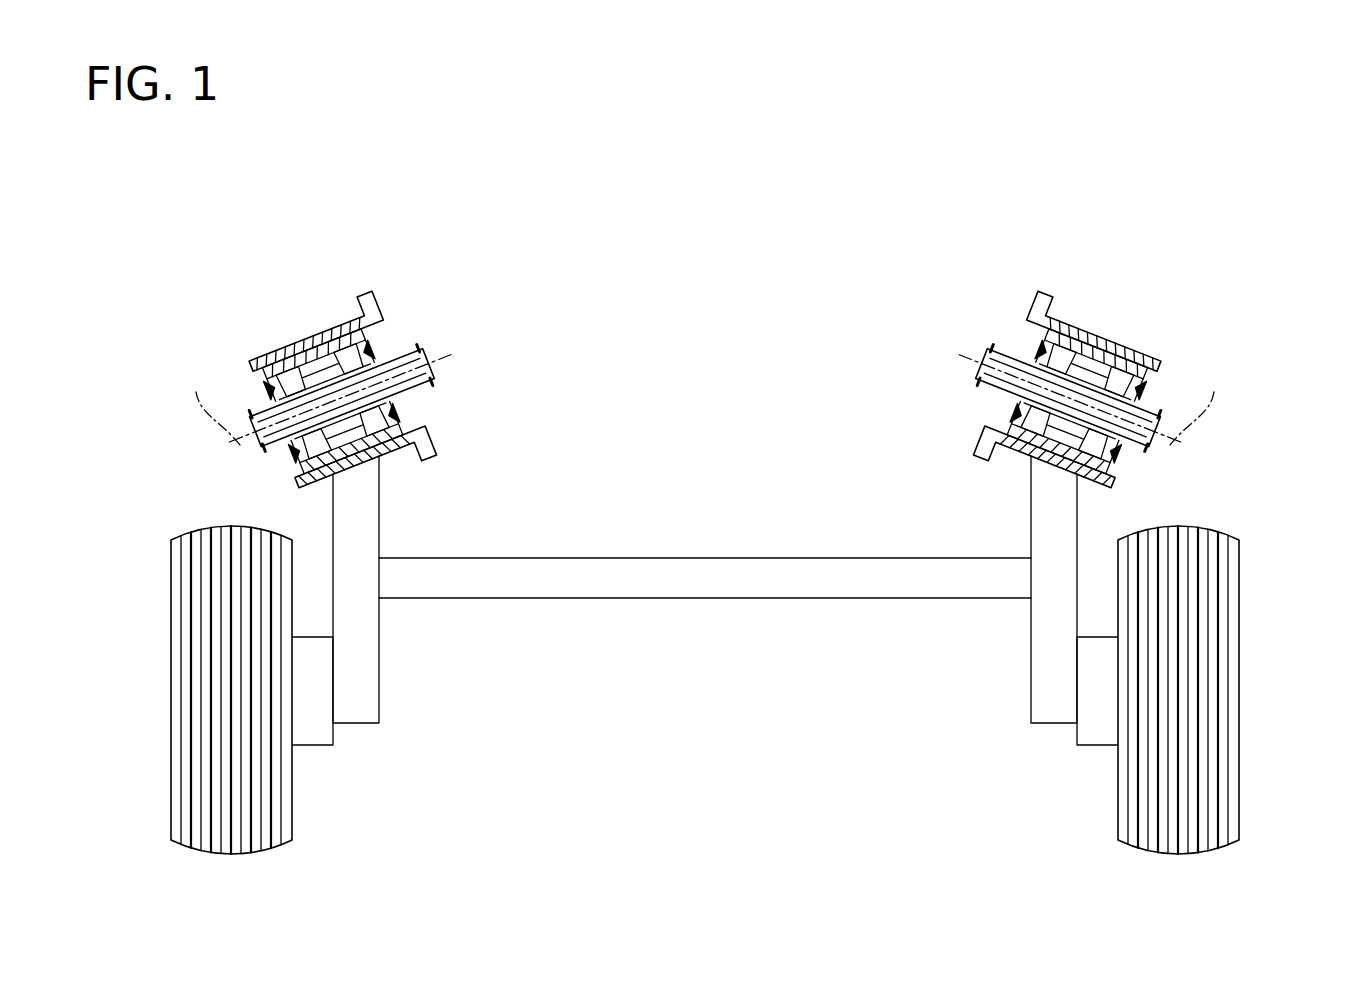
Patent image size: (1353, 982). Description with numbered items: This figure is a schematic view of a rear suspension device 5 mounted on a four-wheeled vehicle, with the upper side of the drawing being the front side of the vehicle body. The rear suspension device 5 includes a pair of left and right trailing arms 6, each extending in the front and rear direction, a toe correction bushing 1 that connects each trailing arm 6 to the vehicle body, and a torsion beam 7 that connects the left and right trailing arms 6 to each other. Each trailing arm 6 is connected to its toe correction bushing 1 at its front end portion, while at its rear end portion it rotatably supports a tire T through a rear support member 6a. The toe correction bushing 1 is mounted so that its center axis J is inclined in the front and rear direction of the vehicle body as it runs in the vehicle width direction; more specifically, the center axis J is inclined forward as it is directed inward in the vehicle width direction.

The toe correction bushing 1 is at (303, 333).
The rear suspension device 5 is at (1062, 218).
The trailing arm 6 is at (381, 682).
The rear support member 6a is at (314, 746).
The torsion beam 7 is at (697, 598).
The tire T is at (170, 578).
The center axis J is at (701, 403).